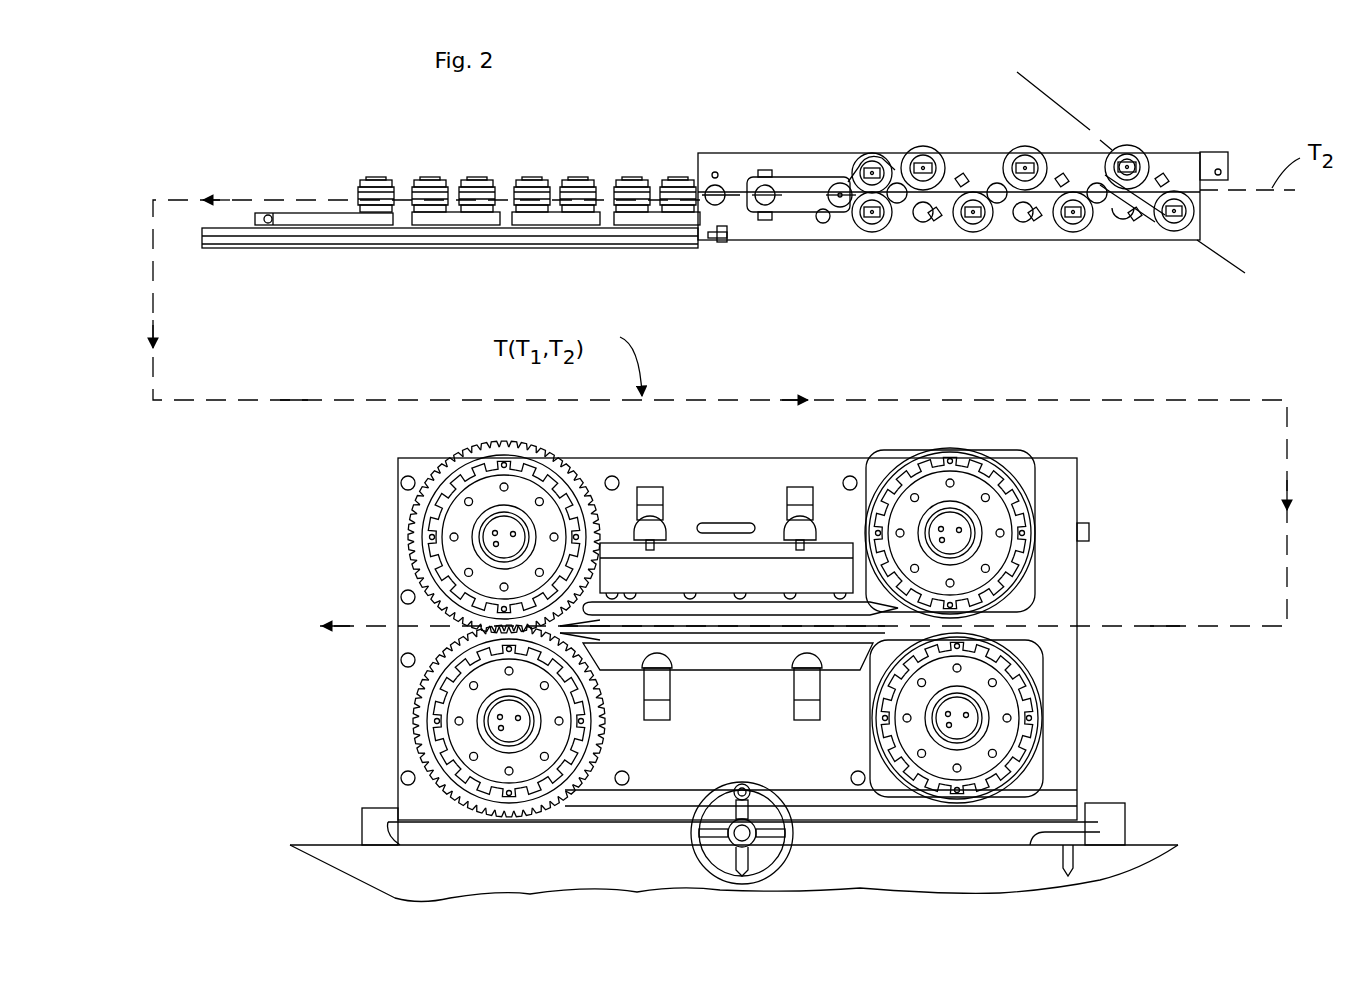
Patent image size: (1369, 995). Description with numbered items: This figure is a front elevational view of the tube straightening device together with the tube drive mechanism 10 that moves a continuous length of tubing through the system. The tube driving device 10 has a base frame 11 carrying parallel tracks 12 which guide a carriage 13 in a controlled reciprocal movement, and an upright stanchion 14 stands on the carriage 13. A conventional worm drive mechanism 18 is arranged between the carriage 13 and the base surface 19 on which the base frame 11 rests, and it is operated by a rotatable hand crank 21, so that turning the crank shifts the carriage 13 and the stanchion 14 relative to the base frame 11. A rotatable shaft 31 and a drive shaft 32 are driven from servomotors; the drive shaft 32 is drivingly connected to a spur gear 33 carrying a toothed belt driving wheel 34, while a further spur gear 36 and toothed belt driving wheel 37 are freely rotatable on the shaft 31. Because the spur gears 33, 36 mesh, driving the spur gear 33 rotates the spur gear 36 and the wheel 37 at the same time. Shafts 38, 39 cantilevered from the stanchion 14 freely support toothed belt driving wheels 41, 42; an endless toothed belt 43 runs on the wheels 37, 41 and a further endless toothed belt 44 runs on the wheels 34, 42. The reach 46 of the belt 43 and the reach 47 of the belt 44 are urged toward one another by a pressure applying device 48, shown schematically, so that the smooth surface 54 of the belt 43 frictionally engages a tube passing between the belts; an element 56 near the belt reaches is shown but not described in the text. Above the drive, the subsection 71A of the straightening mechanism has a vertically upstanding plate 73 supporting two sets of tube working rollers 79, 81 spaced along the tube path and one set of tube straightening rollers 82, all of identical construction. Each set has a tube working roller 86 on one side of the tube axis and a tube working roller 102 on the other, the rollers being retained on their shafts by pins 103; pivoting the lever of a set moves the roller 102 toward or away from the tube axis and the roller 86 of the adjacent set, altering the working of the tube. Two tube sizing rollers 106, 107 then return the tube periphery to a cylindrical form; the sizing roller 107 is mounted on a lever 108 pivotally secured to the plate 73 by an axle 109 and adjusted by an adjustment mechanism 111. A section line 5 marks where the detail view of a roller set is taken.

The section line 5- 5 is at (1017, 72).
The tube drive mechanism 10 is at (350, 503).
The base frame 11 is at (355, 806).
The parallel tracks 12 is at (400, 848).
The carriage 13 is at (911, 840).
The upright stanchion 14 is at (1065, 684).
The worm drive mechanism 18 is at (718, 818).
The base surface 19 is at (646, 845).
The rotatable hand crank 21 is at (758, 788).
The rotatable shaft 31 is at (490, 537).
The drive shaft 32 is at (505, 718).
The spur gear 33 is at (418, 745).
The toothed belt driving wheel 34 is at (448, 685).
The further spur gear 36 is at (420, 480).
The toothed belt driving wheel 37 is at (452, 482).
The shaft 38 is at (955, 528).
The shaft 39 is at (960, 710).
The toothed belt driving wheel 41 is at (1000, 478).
The toothed belt driving wheel 42 is at (1015, 675).
The endless toothed belt 43 is at (828, 454).
The further endless toothed belt 44 is at (826, 800).
The reach of the belt 46 is at (718, 620).
The reach of the belt 47 is at (735, 642).
The pressure applying device 48 is at (757, 578).
The surface of the belt 54 is at (767, 633).
The guide inlet 56 is at (692, 625).
The subsection 71A is at (919, 124).
The vertically upstanding plate 73 is at (735, 158).
The tube working roller set 79 is at (1119, 138).
The tube working roller set 81 is at (1018, 142).
The tube straightening roller set 82 is at (930, 144).
The tube working roller 86 is at (965, 233).
The tube working roller 102 is at (906, 232).
The pins 103 is at (1136, 168).
The tube sizing roller 106 is at (866, 232).
The tube sizing roller 107 is at (862, 160).
The lever 108 is at (788, 170).
The axle 109 is at (838, 180).
The adjustment mechanism 111 is at (752, 168).